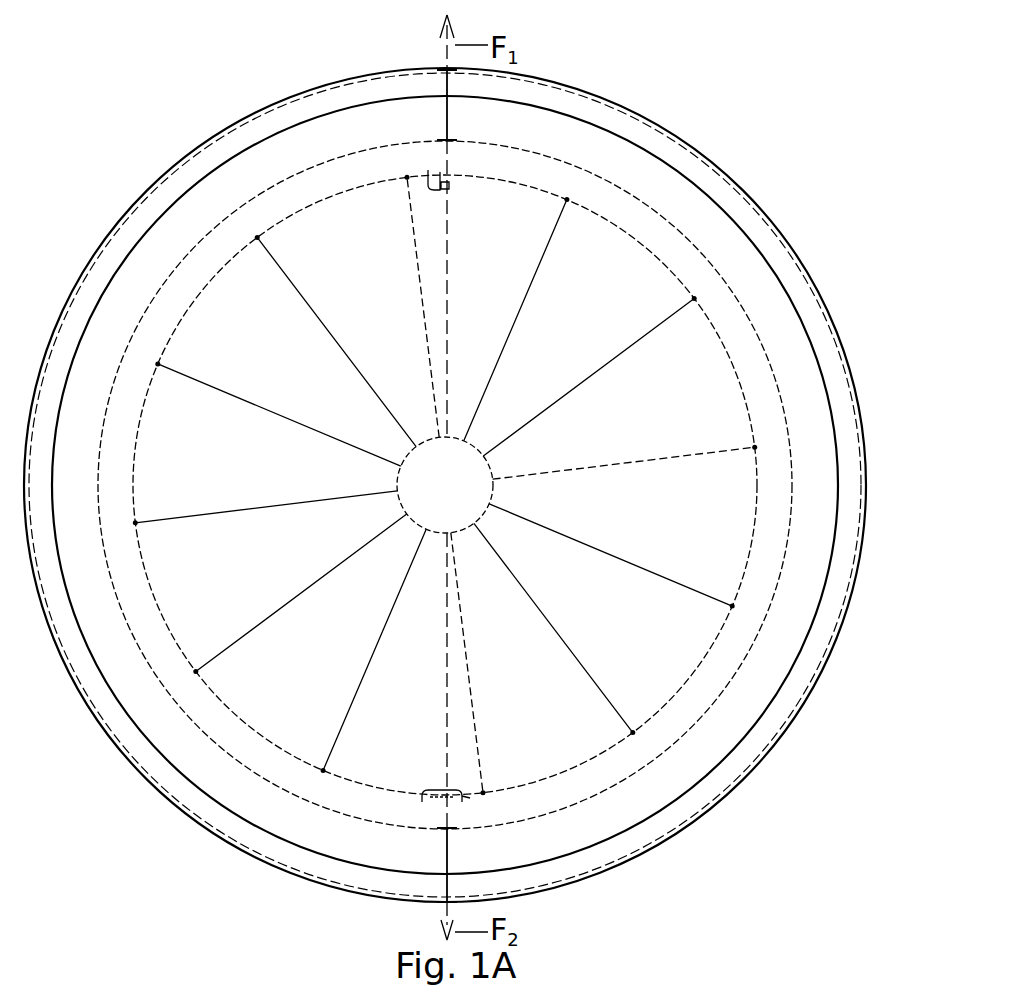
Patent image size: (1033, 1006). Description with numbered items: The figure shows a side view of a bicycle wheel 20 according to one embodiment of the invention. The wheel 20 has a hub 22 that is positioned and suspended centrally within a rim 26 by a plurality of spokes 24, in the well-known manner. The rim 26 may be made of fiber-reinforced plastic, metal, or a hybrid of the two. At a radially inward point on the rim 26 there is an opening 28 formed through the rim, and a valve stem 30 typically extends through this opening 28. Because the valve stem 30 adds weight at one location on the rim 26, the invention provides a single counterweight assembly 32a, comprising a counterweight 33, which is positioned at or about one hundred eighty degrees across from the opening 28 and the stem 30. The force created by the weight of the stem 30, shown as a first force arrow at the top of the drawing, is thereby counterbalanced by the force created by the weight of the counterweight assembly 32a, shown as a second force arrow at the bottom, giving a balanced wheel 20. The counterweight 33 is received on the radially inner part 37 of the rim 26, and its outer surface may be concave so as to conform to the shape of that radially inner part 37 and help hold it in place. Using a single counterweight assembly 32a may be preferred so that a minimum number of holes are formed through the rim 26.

The wheel 20 is at (683, 846).
The hub 22 is at (472, 475).
The spokes 24 is at (578, 470).
The rim 26 is at (600, 878).
The opening 28 is at (458, 191).
The valve stem 30 is at (420, 166).
The counterweight assembly 32a is at (431, 790).
The counterweight 33 is at (479, 804).
The radially inner part 37 is at (583, 752).